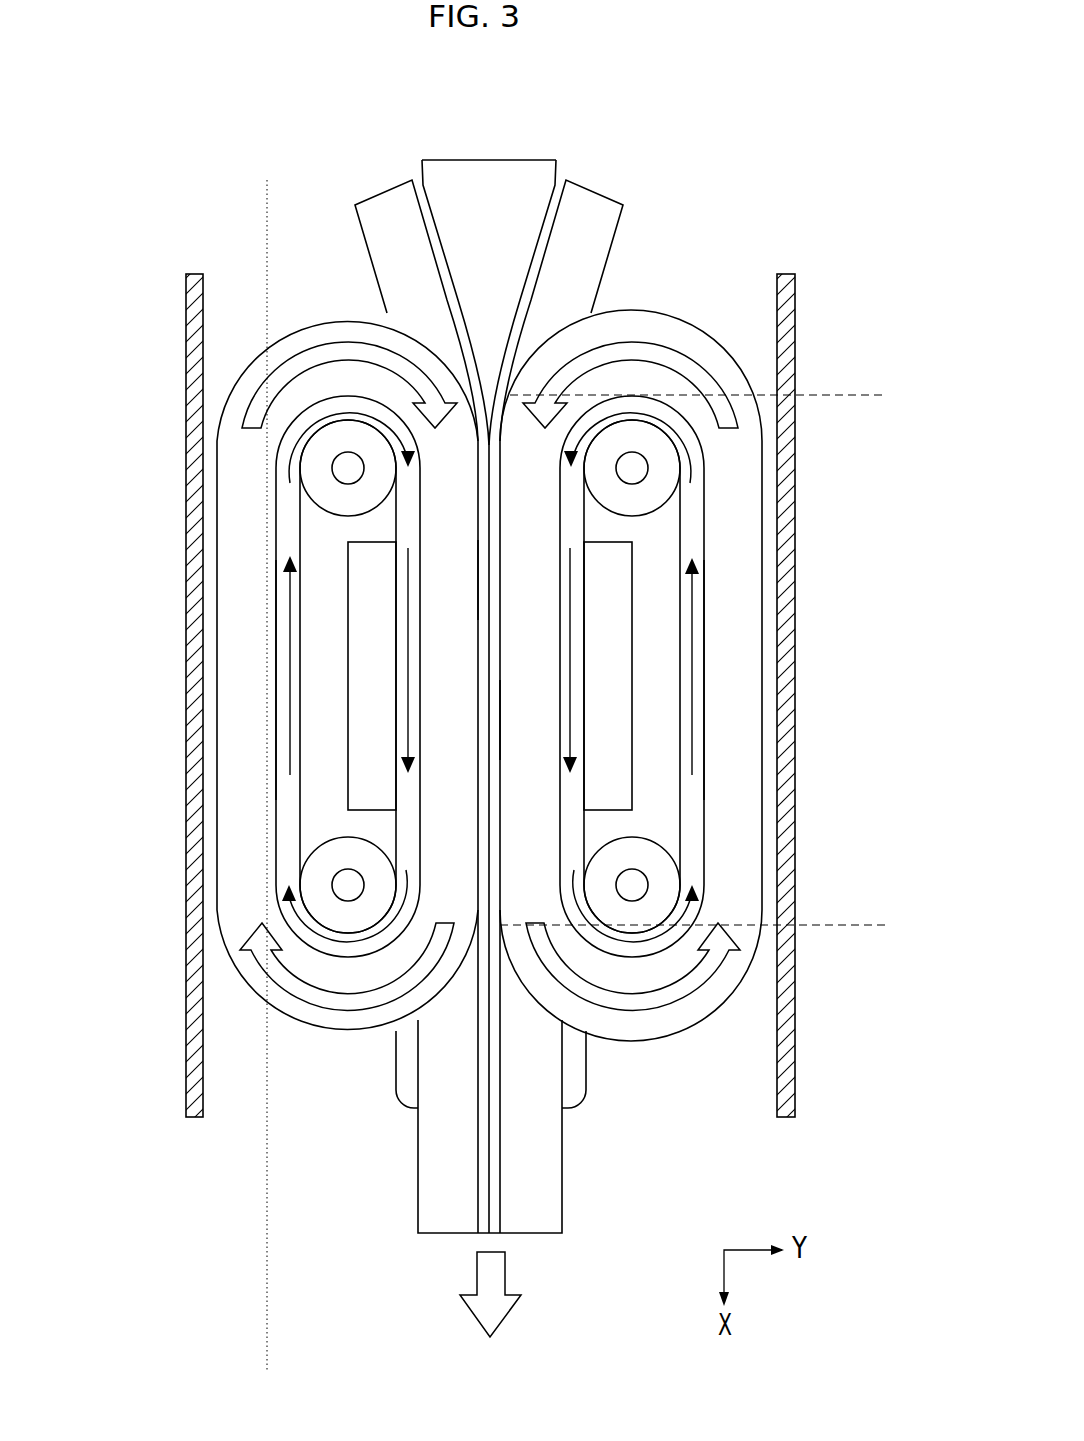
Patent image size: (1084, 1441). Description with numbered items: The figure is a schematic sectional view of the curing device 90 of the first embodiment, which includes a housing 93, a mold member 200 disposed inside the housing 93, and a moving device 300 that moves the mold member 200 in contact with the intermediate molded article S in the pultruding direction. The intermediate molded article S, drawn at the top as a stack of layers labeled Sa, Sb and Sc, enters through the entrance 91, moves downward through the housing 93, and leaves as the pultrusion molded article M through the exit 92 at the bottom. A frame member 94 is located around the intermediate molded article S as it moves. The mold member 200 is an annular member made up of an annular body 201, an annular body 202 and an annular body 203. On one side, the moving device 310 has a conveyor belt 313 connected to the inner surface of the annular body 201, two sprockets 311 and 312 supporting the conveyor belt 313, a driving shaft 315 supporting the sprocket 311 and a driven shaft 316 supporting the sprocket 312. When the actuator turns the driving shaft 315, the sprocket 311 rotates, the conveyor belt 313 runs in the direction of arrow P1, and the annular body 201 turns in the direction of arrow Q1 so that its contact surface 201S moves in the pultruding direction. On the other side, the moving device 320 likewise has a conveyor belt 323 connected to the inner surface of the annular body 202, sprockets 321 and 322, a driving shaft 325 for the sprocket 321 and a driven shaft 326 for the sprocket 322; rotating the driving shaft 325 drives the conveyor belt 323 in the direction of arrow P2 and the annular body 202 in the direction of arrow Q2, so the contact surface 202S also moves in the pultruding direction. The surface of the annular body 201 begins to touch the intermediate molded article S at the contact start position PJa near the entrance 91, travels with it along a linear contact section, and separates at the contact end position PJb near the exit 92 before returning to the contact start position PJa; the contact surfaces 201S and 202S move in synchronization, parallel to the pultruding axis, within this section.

The curing device 90 is at (536, 695).
The entrance 91 is at (489, 247).
The exit 92 is at (395, 1242).
The housing 93 is at (790, 573).
The frame member 94 is at (633, 626).
The mold member 200 is at (494, 771).
The annular body 201 is at (710, 675).
The annular body 202 is at (448, 792).
The annular body 203 is at (410, 1068).
The moving device 300 is at (490, 676).
The moving device 310 is at (738, 676).
The moving device 320 is at (241, 676).
The sprocket 311 is at (655, 862).
The sprocket 312 is at (651, 492).
The conveyor belt 313 is at (697, 727).
The driving shaft 315 is at (632, 886).
The driven shaft 316 is at (634, 468).
The sprocket 321 is at (330, 860).
The sprocket 322 is at (328, 492).
The conveyor belt 323 is at (283, 725).
The driving shaft 325 is at (348, 886).
The driven shaft 326 is at (348, 468).
The contact surface 201S is at (506, 702).
The contact surface 202S is at (482, 591).
The pultrusion molded article M is at (489, 836).
The intermediate molded article S is at (489, 261).
The first sheet Sa is at (595, 207).
The second sheet Sb is at (383, 207).
The core sheet Sc is at (487, 170).
The rotation direction of conveyor belt 313 P1 is at (693, 673).
The rotation direction of conveyor belt 323 P2 is at (290, 665).
The rotation direction of annular body 201 Q1 is at (717, 967).
The rotation direction of annular body 202 Q2 is at (263, 967).
The contact start position PJa is at (724, 394).
The contact end position PJb is at (719, 924).